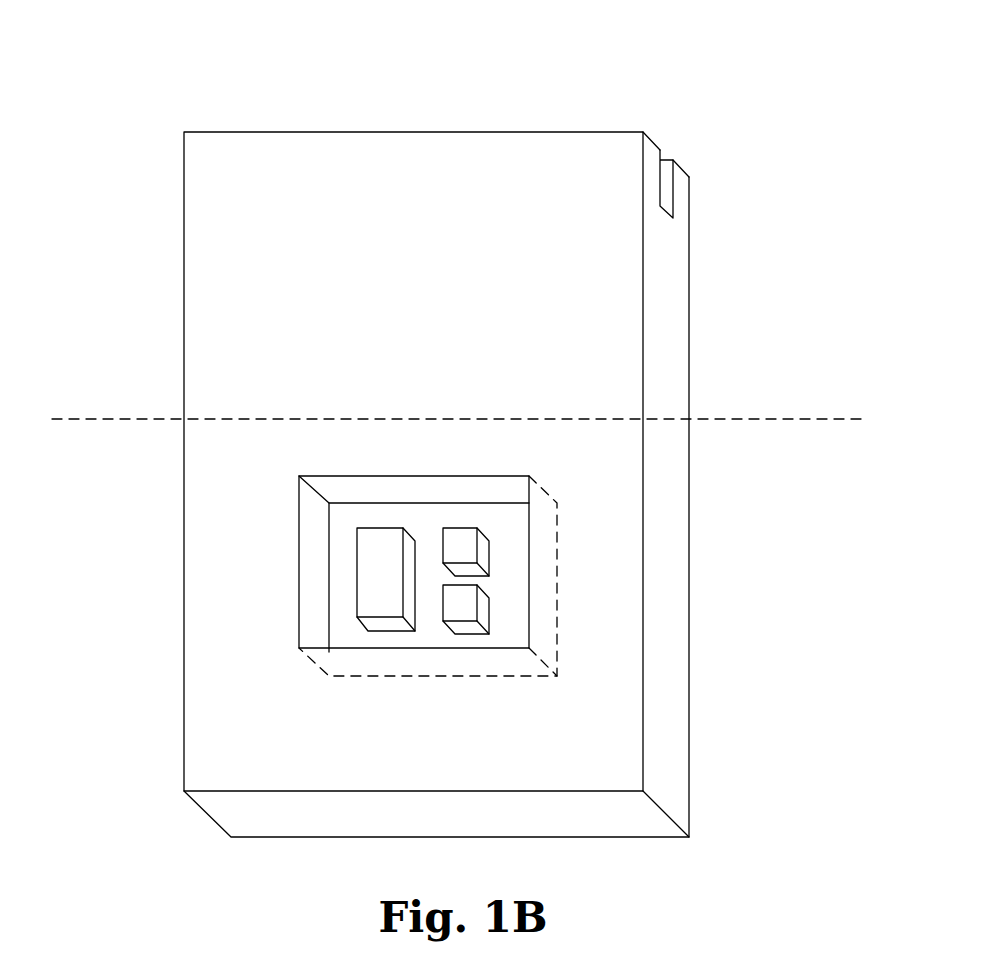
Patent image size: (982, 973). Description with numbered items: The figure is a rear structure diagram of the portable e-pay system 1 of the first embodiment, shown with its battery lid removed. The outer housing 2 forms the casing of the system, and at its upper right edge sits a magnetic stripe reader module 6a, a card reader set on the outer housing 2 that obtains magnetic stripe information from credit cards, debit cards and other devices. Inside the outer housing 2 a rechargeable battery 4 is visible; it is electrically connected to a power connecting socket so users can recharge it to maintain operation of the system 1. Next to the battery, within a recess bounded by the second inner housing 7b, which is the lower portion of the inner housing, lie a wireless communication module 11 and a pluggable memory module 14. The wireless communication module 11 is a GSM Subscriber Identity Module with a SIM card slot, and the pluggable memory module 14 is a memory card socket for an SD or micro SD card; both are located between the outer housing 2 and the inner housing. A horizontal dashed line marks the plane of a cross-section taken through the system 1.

The portable e-pay system 1 is at (410, 132).
The outer housing 2 is at (197, 289).
The rechargeable battery 4 is at (380, 562).
The magnetic stripe reader module 6a is at (663, 182).
The second inner housing 7b is at (357, 514).
The wireless communication module 11 is at (455, 544).
The pluggable memory module 14 is at (455, 608).